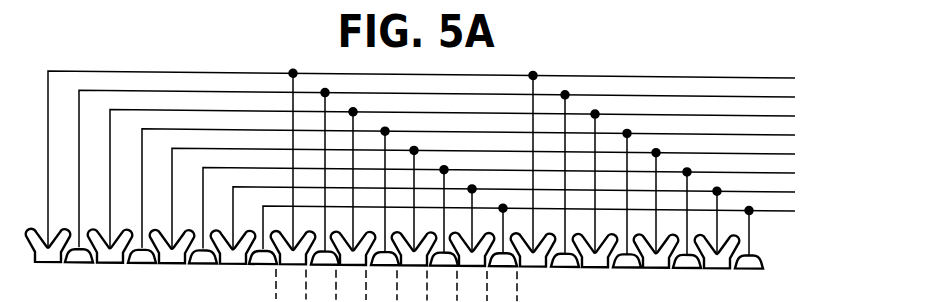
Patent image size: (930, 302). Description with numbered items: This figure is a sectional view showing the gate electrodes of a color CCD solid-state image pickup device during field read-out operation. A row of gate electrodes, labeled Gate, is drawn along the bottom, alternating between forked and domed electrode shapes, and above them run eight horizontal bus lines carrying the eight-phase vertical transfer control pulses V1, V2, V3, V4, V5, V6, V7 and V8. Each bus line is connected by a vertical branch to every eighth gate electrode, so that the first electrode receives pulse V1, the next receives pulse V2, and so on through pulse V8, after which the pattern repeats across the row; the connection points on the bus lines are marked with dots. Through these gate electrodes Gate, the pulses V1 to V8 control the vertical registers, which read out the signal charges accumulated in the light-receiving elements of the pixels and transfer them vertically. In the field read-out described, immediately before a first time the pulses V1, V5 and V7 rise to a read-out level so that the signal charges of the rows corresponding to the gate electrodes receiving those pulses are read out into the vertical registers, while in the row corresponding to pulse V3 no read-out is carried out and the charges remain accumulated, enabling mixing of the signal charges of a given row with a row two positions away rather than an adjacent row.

The transfer pulse V1 is at (436, 181).
The transfer pulse V2 is at (451, 191).
The transfer pulse V3 is at (467, 201).
The transfer pulse V4 is at (483, 210).
The transfer pulse V5 is at (498, 220).
The transfer pulse V6 is at (513, 229).
The transfer pulse V7 is at (528, 239).
The transfer pulse V8 is at (543, 249).
The gate electrodes Gate is at (426, 252).